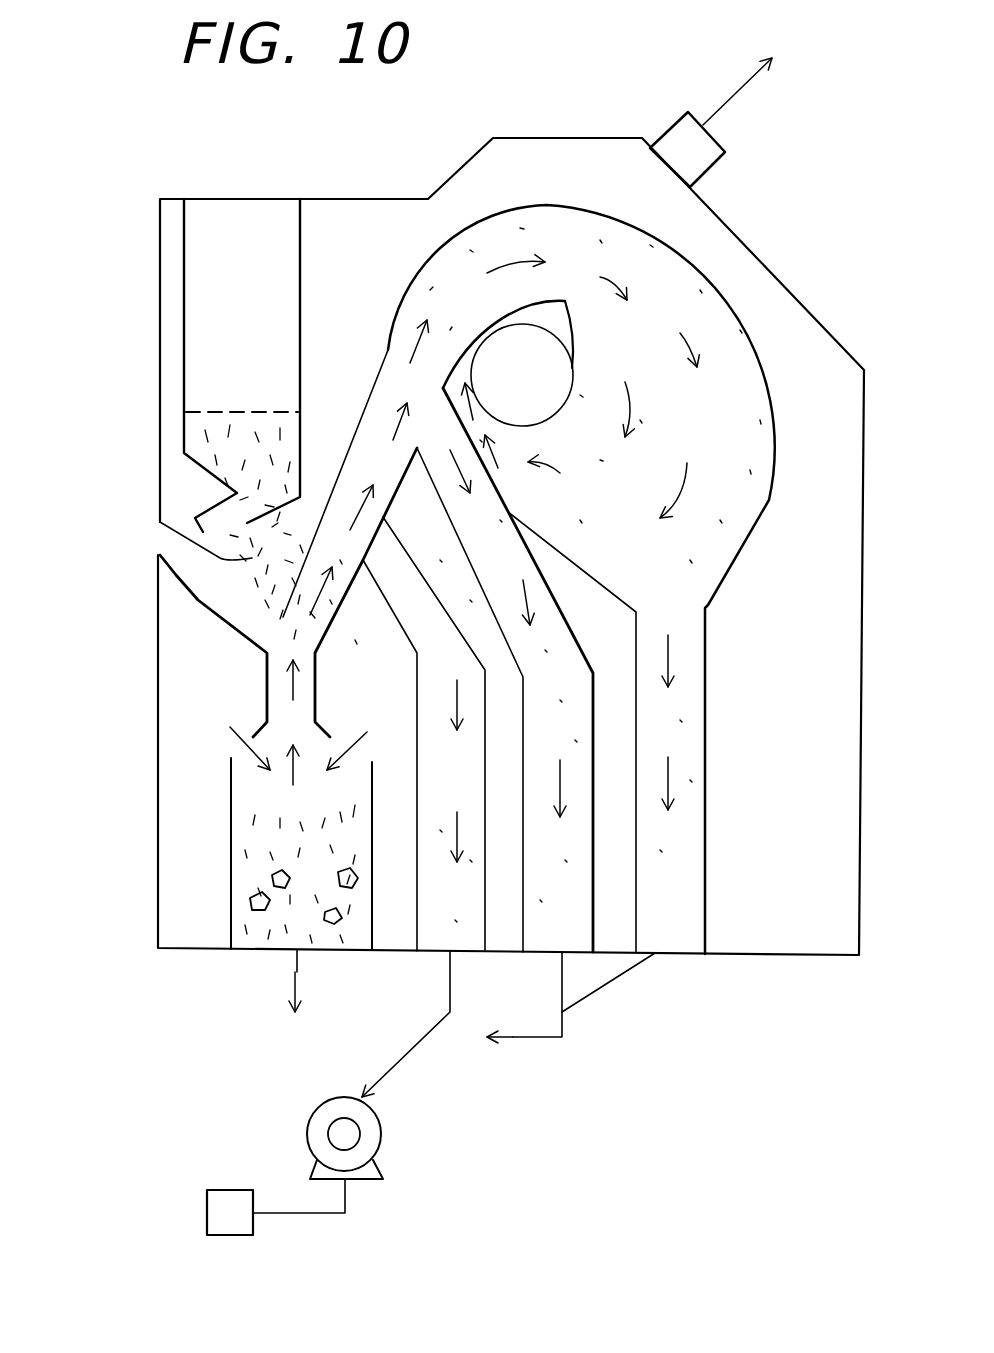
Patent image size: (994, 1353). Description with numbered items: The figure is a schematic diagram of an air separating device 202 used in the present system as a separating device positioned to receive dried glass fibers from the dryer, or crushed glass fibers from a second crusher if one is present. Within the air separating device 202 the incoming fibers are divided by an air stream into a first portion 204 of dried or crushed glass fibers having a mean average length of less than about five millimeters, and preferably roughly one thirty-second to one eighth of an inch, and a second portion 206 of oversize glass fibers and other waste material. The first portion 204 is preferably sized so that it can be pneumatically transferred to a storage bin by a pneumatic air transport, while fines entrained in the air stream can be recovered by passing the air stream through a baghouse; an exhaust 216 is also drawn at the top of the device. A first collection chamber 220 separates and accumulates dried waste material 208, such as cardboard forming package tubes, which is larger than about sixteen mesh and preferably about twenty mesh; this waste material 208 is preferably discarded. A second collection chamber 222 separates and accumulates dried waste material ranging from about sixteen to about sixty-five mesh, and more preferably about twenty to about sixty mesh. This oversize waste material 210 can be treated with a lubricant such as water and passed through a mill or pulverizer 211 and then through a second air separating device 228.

The air separating device 202 is at (728, 225).
The first portion 204 is at (528, 1038).
The second portion 206 is at (293, 968).
The dried waste material 208 is at (252, 905).
The oversize waste material 210 is at (398, 1058).
The mill or pulverizer 211 is at (383, 1130).
The exhaust outlet 216 is at (728, 100).
The first collection chamber 220 is at (240, 855).
The second collection chamber 222 is at (437, 917).
The second air separating device 228 is at (213, 1190).